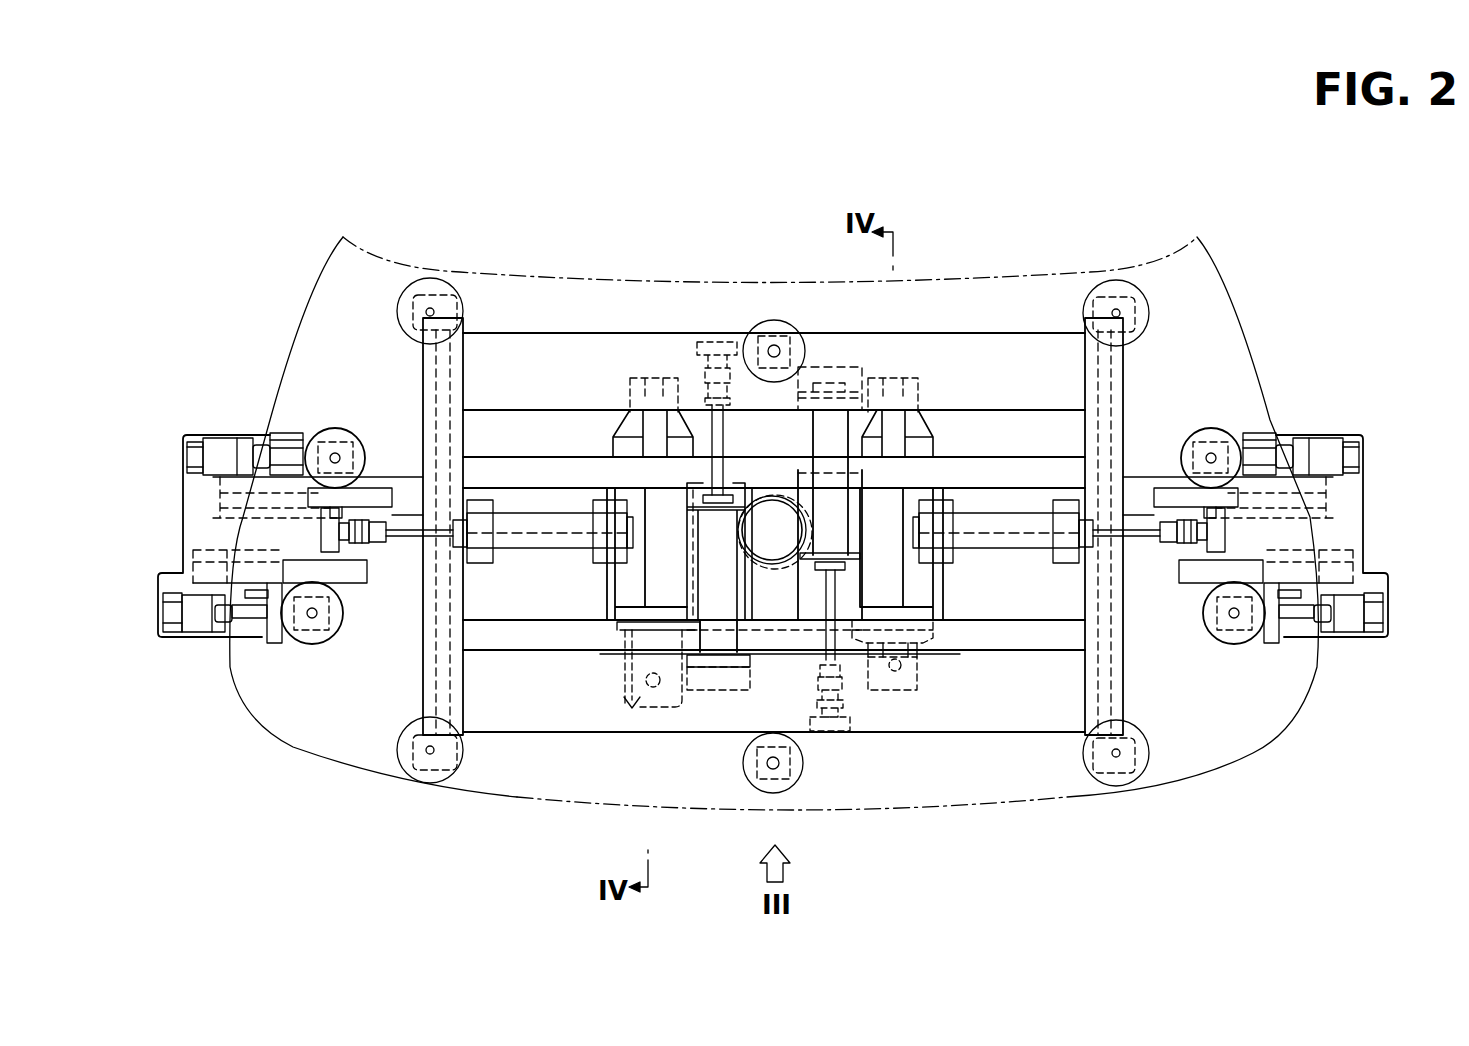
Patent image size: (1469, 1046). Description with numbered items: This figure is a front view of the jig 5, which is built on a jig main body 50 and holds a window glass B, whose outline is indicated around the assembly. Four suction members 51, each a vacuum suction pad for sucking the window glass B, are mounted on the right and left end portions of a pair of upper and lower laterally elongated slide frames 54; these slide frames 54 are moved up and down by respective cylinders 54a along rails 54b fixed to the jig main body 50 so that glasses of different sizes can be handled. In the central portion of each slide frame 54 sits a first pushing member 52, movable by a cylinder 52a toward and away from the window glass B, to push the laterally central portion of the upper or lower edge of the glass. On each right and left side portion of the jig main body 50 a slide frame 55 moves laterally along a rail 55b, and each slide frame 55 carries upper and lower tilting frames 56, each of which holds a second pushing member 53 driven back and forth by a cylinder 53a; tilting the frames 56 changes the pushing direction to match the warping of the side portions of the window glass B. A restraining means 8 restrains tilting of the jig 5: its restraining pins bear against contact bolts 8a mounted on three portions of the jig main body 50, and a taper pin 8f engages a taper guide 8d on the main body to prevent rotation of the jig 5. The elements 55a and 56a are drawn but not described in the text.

The jig 5 is at (1006, 318).
The restraining means 8 is at (626, 415).
The contact bolts 8a is at (640, 383).
The taper guide 8d is at (630, 710).
The taper pin 8f is at (644, 680).
The jig main body 50 is at (1017, 462).
The suction members 51 is at (440, 288).
The first pushing members 52 is at (785, 330).
The cylinder 52a is at (767, 325).
The second pushing members 53 is at (337, 445).
The cylinder 53a is at (345, 440).
The slide frames 54 is at (563, 330).
The cylinders 54a is at (834, 425).
The rails 54b is at (445, 620).
The slide frame 55 is at (196, 512).
The screw shaft 55a is at (542, 548).
The rail 55b is at (377, 497).
The tilting frames 56 is at (293, 427).
The motor end cap 56a is at (222, 450).
The window glass B is at (680, 295).